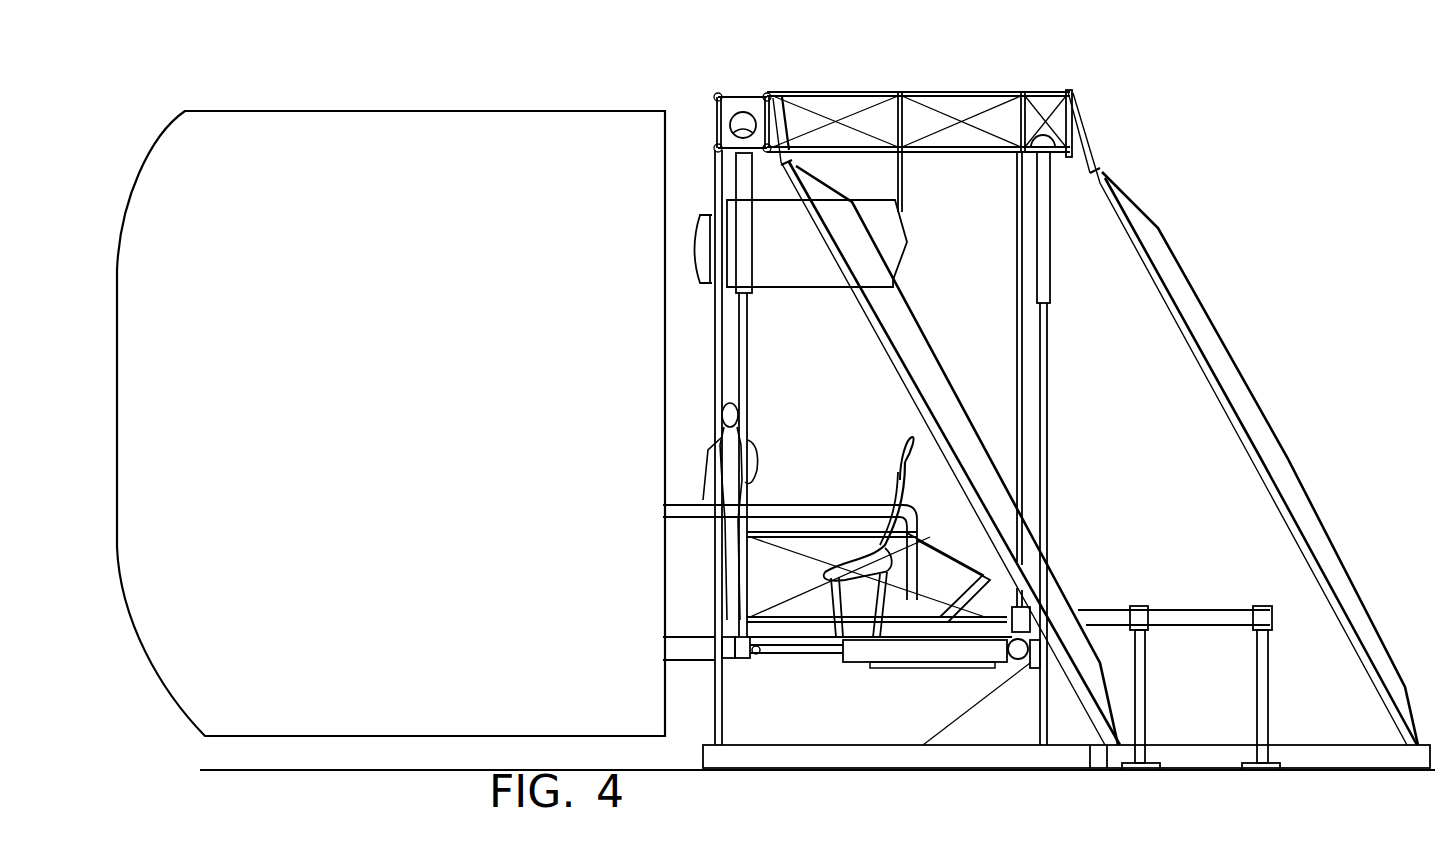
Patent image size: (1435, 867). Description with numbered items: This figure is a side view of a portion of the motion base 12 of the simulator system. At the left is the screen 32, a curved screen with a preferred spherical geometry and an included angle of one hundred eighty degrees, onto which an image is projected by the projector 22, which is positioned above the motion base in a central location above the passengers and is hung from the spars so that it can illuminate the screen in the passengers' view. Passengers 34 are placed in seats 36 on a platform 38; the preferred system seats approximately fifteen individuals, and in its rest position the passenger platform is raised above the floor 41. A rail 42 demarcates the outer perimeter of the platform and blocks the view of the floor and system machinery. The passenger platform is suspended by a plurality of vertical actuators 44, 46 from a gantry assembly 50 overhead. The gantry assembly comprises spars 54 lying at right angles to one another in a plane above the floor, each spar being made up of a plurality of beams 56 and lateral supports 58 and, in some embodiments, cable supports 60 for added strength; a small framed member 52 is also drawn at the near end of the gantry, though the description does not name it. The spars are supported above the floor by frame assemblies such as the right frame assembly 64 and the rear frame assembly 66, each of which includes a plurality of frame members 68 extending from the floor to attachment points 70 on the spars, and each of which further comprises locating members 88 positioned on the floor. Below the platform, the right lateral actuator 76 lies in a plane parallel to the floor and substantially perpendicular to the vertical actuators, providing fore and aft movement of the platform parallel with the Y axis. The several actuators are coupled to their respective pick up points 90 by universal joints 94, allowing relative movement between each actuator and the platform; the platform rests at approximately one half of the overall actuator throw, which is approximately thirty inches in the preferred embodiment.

The motion base 12 is at (1240, 240).
The projector 22 is at (778, 268).
The screen 32 is at (483, 125).
The passengers 34 is at (708, 405).
The seats 36 is at (880, 485).
The platform 38 is at (680, 632).
The floor 41 is at (640, 768).
The rail 42 is at (678, 503).
The vertical actuator 44 is at (752, 335).
The vertical actuator 46 is at (1047, 330).
The gantry assembly 50 is at (922, 122).
The pulley frame 52 is at (733, 80).
The spars 54 is at (1017, 80).
The beams 56 is at (823, 143).
The lateral supports 58 is at (715, 110).
The cable supports 60 is at (870, 107).
The right frame assembly 64 is at (700, 332).
The rear frame assembly 66 is at (1182, 214).
The frame members 68 is at (715, 440).
The attachment points 70 is at (1092, 100).
The right lateral actuator 76 is at (880, 664).
The locating members 88 is at (752, 712).
The pick up points 90 is at (752, 665).
The universal joints 94 is at (767, 647).